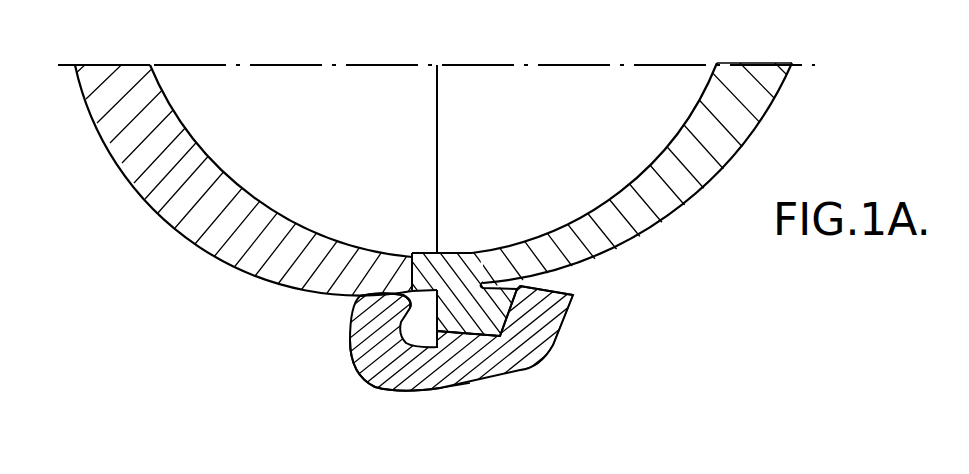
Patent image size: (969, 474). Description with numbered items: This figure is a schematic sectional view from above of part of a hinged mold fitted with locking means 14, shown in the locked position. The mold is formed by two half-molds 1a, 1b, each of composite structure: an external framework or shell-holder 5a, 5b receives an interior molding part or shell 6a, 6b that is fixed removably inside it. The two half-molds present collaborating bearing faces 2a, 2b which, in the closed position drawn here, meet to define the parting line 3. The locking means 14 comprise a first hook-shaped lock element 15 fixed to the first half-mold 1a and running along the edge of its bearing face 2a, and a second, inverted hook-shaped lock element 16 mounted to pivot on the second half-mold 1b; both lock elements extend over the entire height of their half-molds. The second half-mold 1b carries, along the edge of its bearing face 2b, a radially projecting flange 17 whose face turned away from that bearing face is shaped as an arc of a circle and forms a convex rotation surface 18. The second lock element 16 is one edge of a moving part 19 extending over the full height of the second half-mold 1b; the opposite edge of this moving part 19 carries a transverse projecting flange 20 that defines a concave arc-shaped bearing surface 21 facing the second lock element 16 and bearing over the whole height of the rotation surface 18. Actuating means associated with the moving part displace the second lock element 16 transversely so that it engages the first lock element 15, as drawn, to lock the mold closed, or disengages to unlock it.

The first half-mold 1a is at (215, 261).
The second half-mold 1b is at (660, 229).
The bearing face 2a is at (437, 148).
The bearing face 2b is at (437, 205).
The parting line 3 is at (437, 105).
The shell-holder 5a is at (210, 207).
The shell-holder 5b is at (738, 120).
The shell 6a is at (193, 100).
The shell 6b is at (632, 97).
The locking means 14 is at (343, 393).
The first hook-shaped lock element 15 is at (403, 305).
The second hook-shaped lock element 16 is at (377, 367).
The radially projecting flange 17 is at (470, 315).
The rotation surface 18 is at (512, 311).
The moving part 19 is at (433, 386).
The transverse projecting flange 20 is at (542, 322).
The bearing surface in the shape of an arc of a circle 21 is at (546, 343).